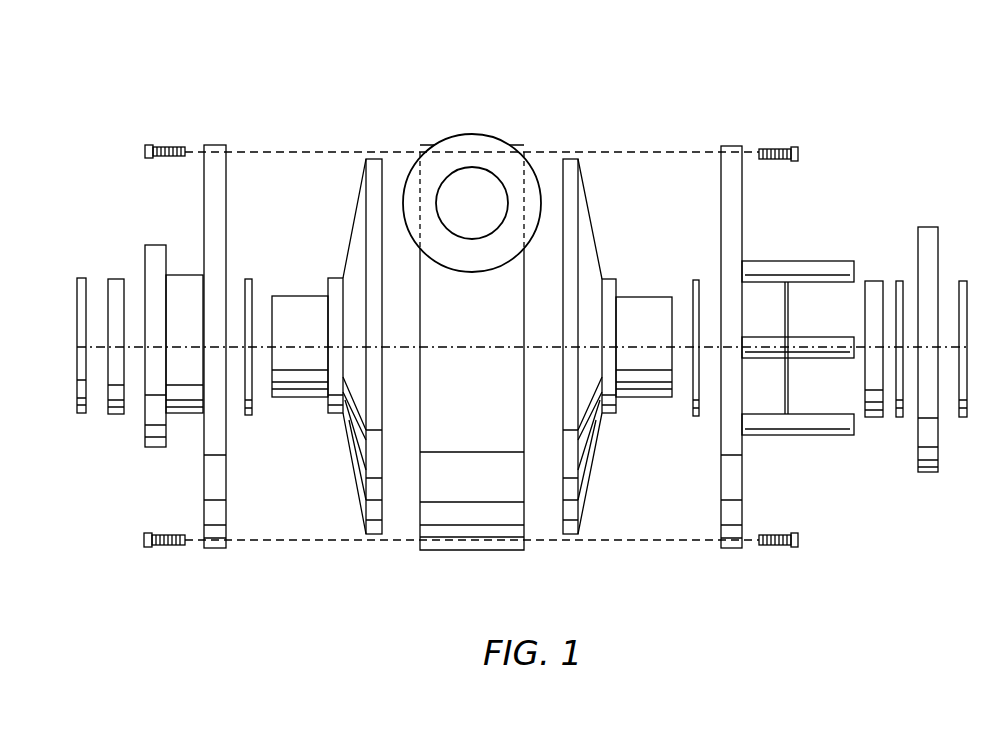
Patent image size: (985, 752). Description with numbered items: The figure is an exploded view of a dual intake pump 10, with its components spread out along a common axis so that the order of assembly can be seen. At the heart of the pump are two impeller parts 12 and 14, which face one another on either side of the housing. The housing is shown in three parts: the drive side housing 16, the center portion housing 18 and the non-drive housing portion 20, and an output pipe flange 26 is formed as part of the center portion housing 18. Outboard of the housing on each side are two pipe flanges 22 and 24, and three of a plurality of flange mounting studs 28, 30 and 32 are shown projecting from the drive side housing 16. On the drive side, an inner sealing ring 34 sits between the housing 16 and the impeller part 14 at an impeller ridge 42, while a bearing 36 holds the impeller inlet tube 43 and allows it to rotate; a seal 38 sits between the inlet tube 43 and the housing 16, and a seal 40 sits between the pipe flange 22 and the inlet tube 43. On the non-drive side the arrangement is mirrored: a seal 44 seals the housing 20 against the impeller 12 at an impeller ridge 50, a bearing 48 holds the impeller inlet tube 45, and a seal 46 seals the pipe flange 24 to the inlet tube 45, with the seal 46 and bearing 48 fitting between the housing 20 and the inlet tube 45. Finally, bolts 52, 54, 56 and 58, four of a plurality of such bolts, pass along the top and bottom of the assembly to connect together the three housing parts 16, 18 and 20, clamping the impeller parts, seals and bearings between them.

The dual intake pump 10 is at (634, 122).
The impeller part 12 is at (353, 218).
The impeller part 14 is at (590, 218).
The drive side housing 16 is at (726, 145).
The center portion housing 18 is at (470, 551).
The non-drive housing portion 20 is at (213, 144).
The pipe flange 22 is at (930, 226).
The pipe flange 24 is at (154, 244).
The output pipe flange 26 is at (472, 134).
The flange mounting stud 28 is at (797, 414).
The flange mounting stud 30 is at (797, 337).
The flange mounting stud 32 is at (797, 261).
The inner sealing ring 34 is at (695, 279).
The bearing 36 is at (874, 280).
The seal 38 is at (899, 418).
The seal 40 is at (961, 418).
The impeller ridge 42 is at (610, 279).
The impeller inlet tube 43 is at (645, 296).
The seal 44 is at (248, 278).
The impeller inlet tube 45 is at (290, 295).
The seal 46 is at (84, 416).
The bearing 48 is at (117, 278).
The impeller ridge 50 is at (334, 278).
The bolt 52 is at (775, 548).
The bolt 54 is at (775, 147).
The bolt 56 is at (168, 548).
The bolt 58 is at (172, 144).